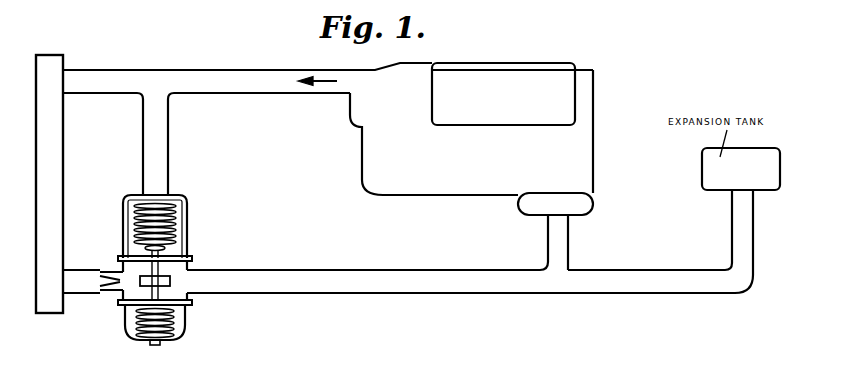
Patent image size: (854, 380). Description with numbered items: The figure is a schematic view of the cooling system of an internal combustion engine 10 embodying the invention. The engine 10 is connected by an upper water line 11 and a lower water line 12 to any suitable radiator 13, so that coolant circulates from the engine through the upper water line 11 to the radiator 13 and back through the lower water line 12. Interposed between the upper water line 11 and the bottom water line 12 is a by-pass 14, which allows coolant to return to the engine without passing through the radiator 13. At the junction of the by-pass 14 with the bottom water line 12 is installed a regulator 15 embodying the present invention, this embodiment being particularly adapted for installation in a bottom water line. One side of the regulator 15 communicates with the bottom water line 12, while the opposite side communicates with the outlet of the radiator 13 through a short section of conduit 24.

The internal combustion engine 10 is at (375, 155).
The upper water line 11 is at (268, 86).
The lower water line 12 is at (283, 270).
The radiator 13 is at (73, 165).
The by-pass 14 is at (168, 155).
The regulator 15 is at (202, 232).
The short section of conduit 24 is at (89, 287).